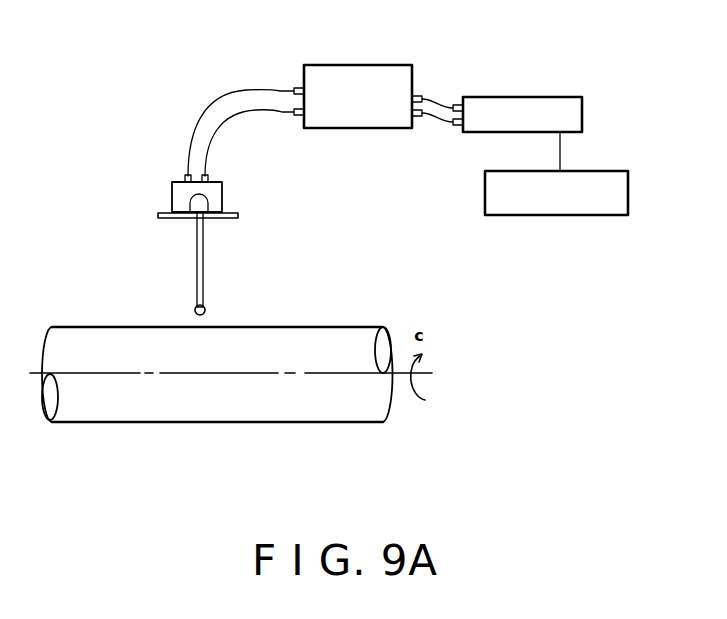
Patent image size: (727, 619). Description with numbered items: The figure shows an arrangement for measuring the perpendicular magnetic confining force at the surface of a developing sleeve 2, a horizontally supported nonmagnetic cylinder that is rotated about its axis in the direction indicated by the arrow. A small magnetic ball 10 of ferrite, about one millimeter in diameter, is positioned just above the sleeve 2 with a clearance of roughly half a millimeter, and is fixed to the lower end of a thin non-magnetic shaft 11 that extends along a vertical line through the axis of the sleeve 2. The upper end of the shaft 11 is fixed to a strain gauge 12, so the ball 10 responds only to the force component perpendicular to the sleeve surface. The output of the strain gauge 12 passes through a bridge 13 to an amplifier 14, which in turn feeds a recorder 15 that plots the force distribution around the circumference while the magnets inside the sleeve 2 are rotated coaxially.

The developing sleeve 2 is at (185, 423).
The magnetic ball 10 is at (205, 308).
The shaft 11 is at (203, 257).
The strain gauge 12 is at (222, 187).
The bridge 13 is at (392, 64).
The amplifier 14 is at (552, 96).
The recorder 15 is at (613, 170).